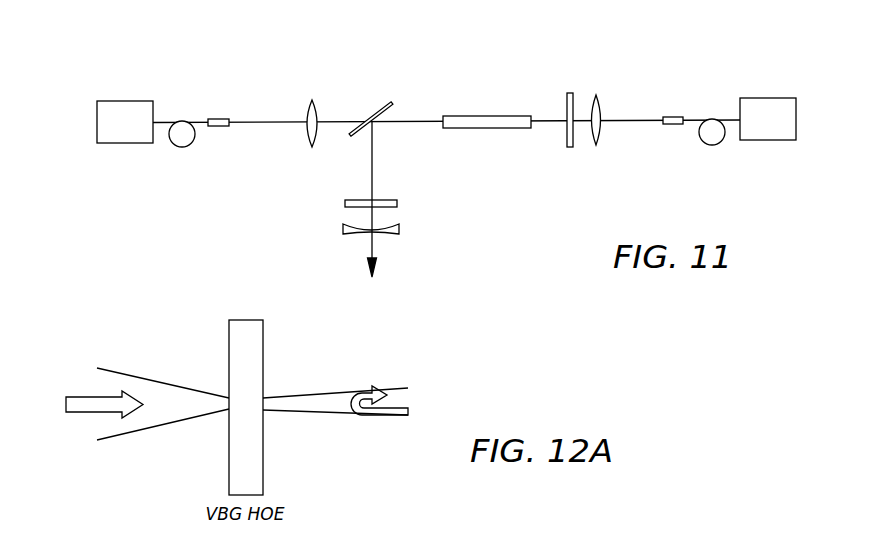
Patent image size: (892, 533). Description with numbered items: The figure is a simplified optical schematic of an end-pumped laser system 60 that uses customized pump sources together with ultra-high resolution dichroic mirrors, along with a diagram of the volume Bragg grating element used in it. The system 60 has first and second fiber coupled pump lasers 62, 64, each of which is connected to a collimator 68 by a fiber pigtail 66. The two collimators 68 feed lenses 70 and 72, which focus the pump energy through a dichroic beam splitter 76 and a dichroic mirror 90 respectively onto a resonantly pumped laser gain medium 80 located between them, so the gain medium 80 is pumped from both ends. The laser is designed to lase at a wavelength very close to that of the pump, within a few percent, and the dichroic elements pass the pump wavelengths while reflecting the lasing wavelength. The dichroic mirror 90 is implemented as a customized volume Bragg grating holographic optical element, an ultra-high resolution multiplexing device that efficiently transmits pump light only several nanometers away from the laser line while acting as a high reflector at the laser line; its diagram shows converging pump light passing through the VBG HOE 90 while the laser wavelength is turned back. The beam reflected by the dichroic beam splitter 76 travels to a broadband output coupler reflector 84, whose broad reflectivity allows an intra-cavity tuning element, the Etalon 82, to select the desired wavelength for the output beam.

In FIG. 11, the system 60 is at (722, 59).
In FIG. 11, the first fiber coupled pump laser 62 is at (123, 143).
In FIG. 11, the second fiber coupled pump laser 64 is at (797, 140).
In FIG. 11, the fiber pigtail 66 is at (177, 147).
In FIG. 11, the collimator 68 is at (218, 127).
In FIG. 11, the lens 70 is at (310, 101).
In FIG. 11, the lens 72 is at (600, 105).
In FIG. 11, the dichroic beam splitter 76 is at (352, 137).
In FIG. 11, the resonantly pumped laser gain medium 80 is at (488, 115).
In FIG. 11, the Etalon 82 is at (398, 203).
In FIG. 11, the broadband output coupler reflector 84 is at (399, 228).
In FIG. 11, the dichroic mirror (VBG HOE) 90 is at (569, 93).
In FIG. 12A, the dichroic mirror (VBG HOE) 90 is at (263, 358).